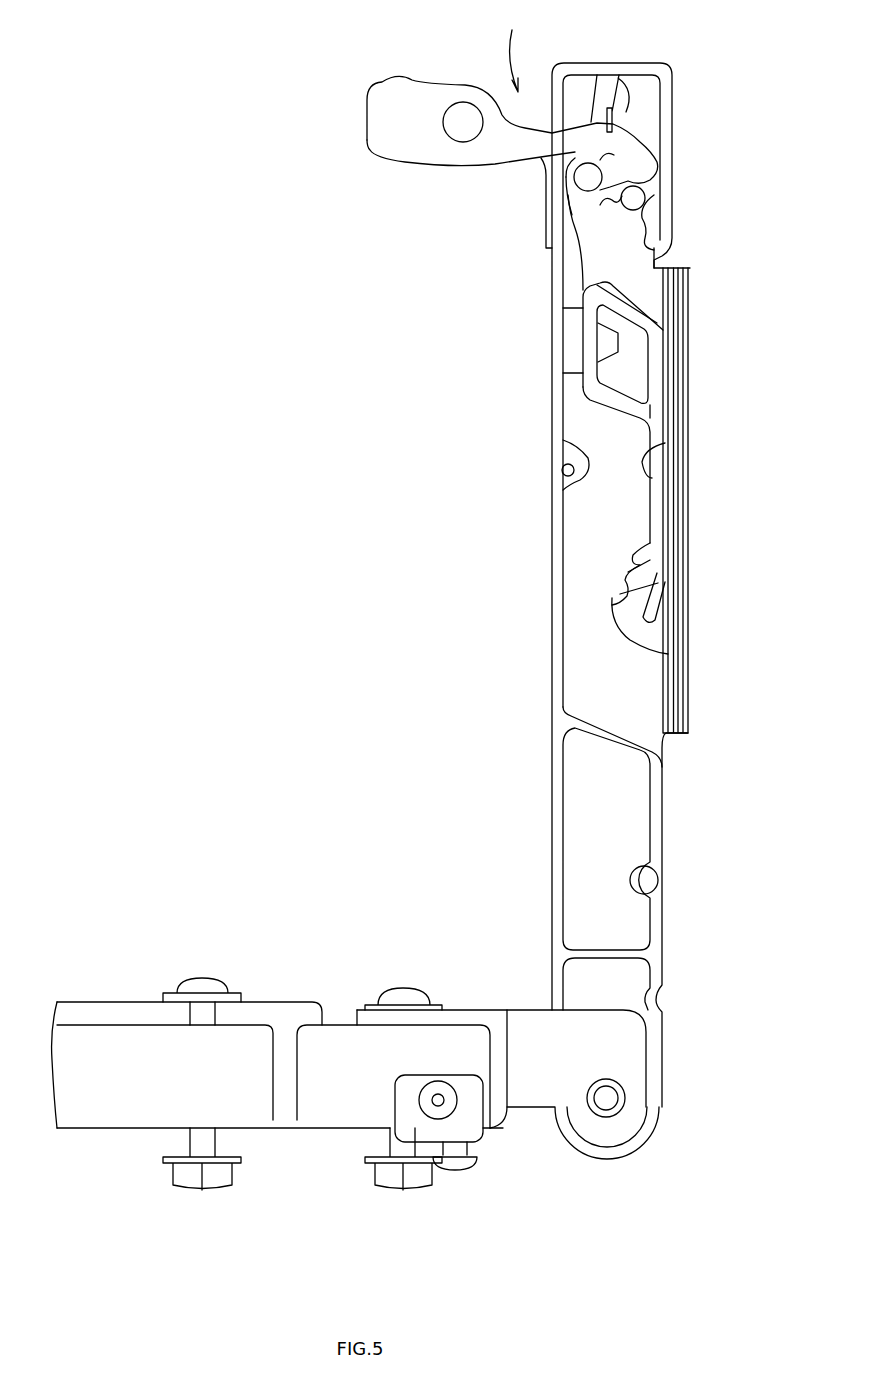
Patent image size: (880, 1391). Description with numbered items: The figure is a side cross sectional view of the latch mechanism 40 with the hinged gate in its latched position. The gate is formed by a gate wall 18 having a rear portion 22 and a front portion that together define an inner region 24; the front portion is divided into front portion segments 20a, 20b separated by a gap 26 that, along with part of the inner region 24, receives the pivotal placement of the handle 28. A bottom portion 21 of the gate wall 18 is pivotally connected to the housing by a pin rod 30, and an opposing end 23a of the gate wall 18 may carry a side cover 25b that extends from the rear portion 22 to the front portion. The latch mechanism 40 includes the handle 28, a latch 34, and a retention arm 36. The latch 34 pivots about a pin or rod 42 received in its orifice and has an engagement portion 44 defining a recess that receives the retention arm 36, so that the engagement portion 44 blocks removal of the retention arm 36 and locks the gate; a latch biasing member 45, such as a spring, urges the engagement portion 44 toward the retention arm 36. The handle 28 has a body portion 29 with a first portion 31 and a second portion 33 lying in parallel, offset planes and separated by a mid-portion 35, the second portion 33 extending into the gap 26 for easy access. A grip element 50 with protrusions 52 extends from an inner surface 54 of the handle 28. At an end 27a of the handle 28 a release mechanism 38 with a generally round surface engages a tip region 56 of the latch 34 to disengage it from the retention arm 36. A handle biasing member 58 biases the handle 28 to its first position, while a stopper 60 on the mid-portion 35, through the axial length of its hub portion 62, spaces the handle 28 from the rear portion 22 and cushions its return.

The gate wall 18 is at (552, 690).
The front portion segment 20a is at (673, 121).
The front portion segment 20b is at (665, 827).
The bottom portion 21 is at (572, 1143).
The rear portion 22 is at (552, 765).
The opposing end 23a is at (660, 952).
The inner region 24 is at (590, 610).
The side cover 25b is at (690, 290).
The gap 26 is at (628, 690).
The end of the handle 27a is at (652, 412).
The handle 28 is at (655, 503).
The body portion 29 is at (598, 286).
The pin rod 30 is at (607, 1098).
The first portion 31 is at (573, 227).
The second portion 33 is at (667, 525).
The latch 34 is at (380, 92).
The mid-portion 35 is at (652, 357).
The retention arm 36 is at (588, 177).
The release mechanism 38 is at (633, 198).
The latch mechanism 40 is at (508, 49).
The pin or rod 42 is at (457, 118).
The engagement portion 44 is at (603, 160).
The latch biasing member 45 is at (540, 168).
The grip element 50 is at (668, 654).
The protrusions 52 is at (647, 617).
The inner surface 54 is at (660, 448).
The tip region 56 is at (648, 168).
The handle biasing member 58 is at (627, 98).
The stopper 60 is at (563, 350).
The hub portion 62 is at (575, 395).